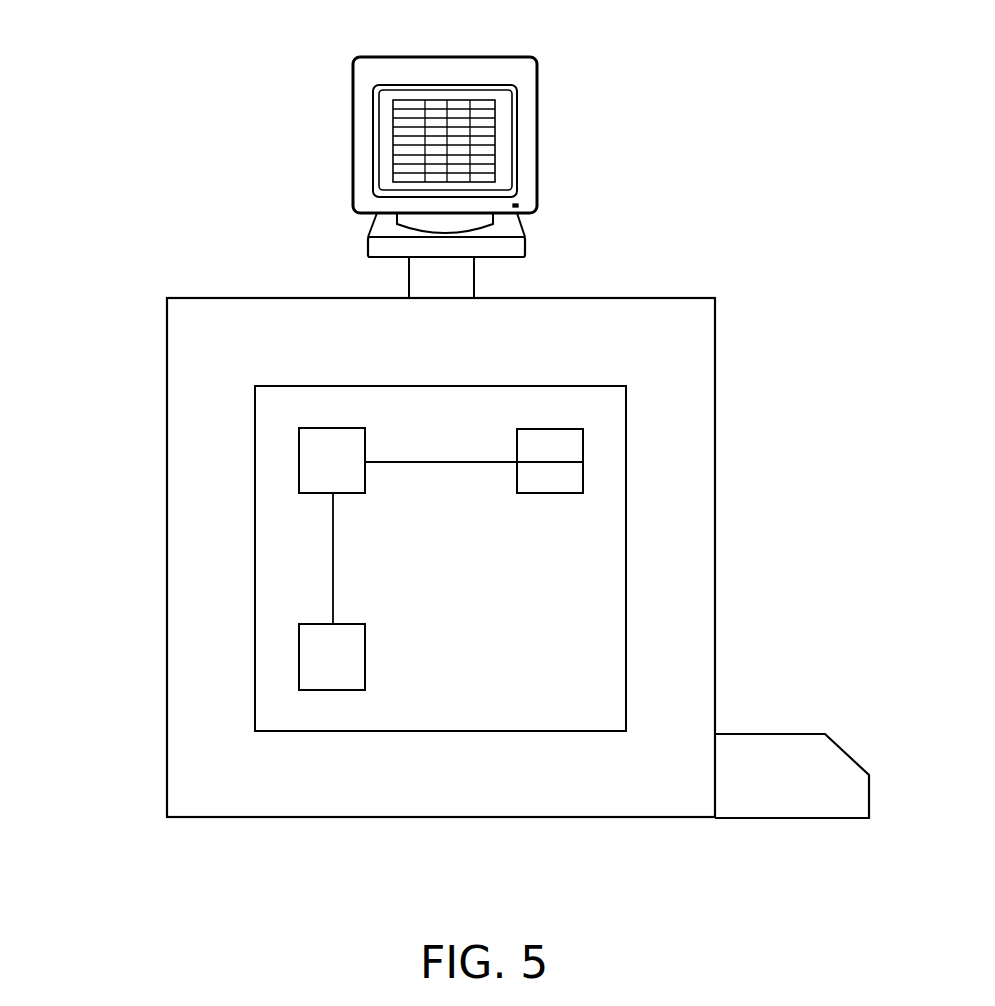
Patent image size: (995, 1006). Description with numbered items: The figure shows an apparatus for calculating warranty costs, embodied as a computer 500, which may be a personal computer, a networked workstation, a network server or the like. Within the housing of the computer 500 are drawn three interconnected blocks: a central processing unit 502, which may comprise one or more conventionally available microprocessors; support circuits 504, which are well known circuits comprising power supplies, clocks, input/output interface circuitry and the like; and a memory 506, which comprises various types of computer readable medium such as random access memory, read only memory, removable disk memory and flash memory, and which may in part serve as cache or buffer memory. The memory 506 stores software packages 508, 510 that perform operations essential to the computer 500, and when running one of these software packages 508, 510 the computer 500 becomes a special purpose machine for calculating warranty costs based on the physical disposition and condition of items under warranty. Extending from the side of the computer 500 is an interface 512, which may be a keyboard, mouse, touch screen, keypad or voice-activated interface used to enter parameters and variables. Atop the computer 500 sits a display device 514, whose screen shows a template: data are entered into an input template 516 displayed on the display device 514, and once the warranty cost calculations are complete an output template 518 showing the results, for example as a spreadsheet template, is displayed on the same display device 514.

The computer 500 is at (167, 752).
The central processing unit 502 is at (299, 462).
The support circuits 504 is at (300, 658).
The memory 506 is at (551, 429).
The software package 508 is at (583, 445).
The software package 510 is at (583, 480).
The interface 512 is at (758, 733).
The display device 514 is at (491, 57).
The input template 516 is at (578, 140).
The output template 518 is at (495, 152).